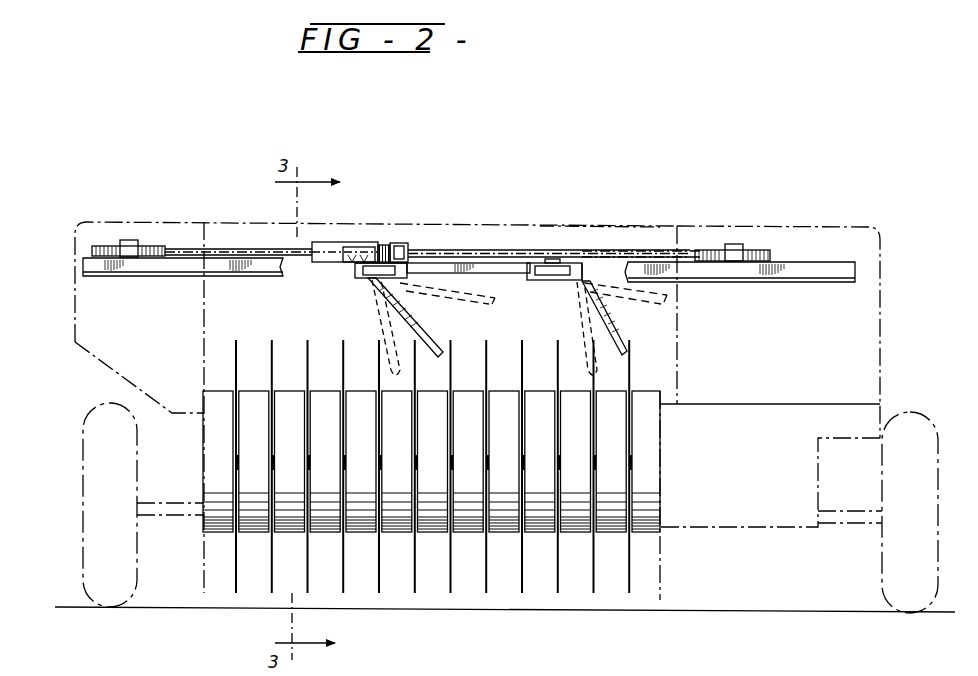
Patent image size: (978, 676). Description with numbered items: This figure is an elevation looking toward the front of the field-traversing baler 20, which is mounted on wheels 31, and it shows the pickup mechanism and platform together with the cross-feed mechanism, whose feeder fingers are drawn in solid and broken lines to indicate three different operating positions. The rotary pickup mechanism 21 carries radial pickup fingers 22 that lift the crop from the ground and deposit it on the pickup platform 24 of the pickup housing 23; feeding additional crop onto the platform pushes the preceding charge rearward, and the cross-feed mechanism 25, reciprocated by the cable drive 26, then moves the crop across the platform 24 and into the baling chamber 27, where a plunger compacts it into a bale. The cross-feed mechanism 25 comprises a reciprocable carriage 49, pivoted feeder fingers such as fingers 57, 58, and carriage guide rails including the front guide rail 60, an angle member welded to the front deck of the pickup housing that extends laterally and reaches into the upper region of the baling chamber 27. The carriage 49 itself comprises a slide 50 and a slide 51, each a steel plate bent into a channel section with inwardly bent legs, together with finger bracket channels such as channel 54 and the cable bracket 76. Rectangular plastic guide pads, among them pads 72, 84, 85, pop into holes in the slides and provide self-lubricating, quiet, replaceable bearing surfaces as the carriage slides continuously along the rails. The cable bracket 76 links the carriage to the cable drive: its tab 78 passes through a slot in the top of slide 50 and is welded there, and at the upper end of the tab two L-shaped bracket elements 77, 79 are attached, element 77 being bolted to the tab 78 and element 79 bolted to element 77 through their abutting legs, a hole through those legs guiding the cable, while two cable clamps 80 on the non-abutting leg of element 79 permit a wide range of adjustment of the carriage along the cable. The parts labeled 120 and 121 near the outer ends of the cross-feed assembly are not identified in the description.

The baler 20 is at (550, 170).
The rotary pickup mechanism 21 is at (632, 590).
The pickup fingers 22 is at (274, 580).
The pickup housing 23 is at (73, 313).
The pickup platform 24 is at (668, 404).
The cross-feed mechanism 25 is at (463, 247).
The cable drive 26 is at (487, 252).
The baling chamber 27 is at (868, 256).
The wheels 31 is at (95, 462).
The reciprocable carriage 49 is at (375, 312).
The slide 50 is at (362, 268).
The slide 51 is at (580, 262).
The finger bracket channel 54 is at (502, 290).
The feeder finger 57 is at (430, 322).
The feeder finger 58 is at (612, 335).
The front guide rail 60 is at (752, 278).
The guide pad 72 is at (376, 276).
The cable bracket 76 is at (364, 246).
The L-shaped bracket element 77 is at (320, 242).
The tab 78 is at (343, 262).
The L-shaped bracket element 79 is at (384, 245).
The cable clamps 80 is at (404, 256).
The guide pad 84 is at (557, 262).
The guide pad 85 is at (575, 292).
The rack 120 is at (110, 246).
The rack 121 is at (748, 252).